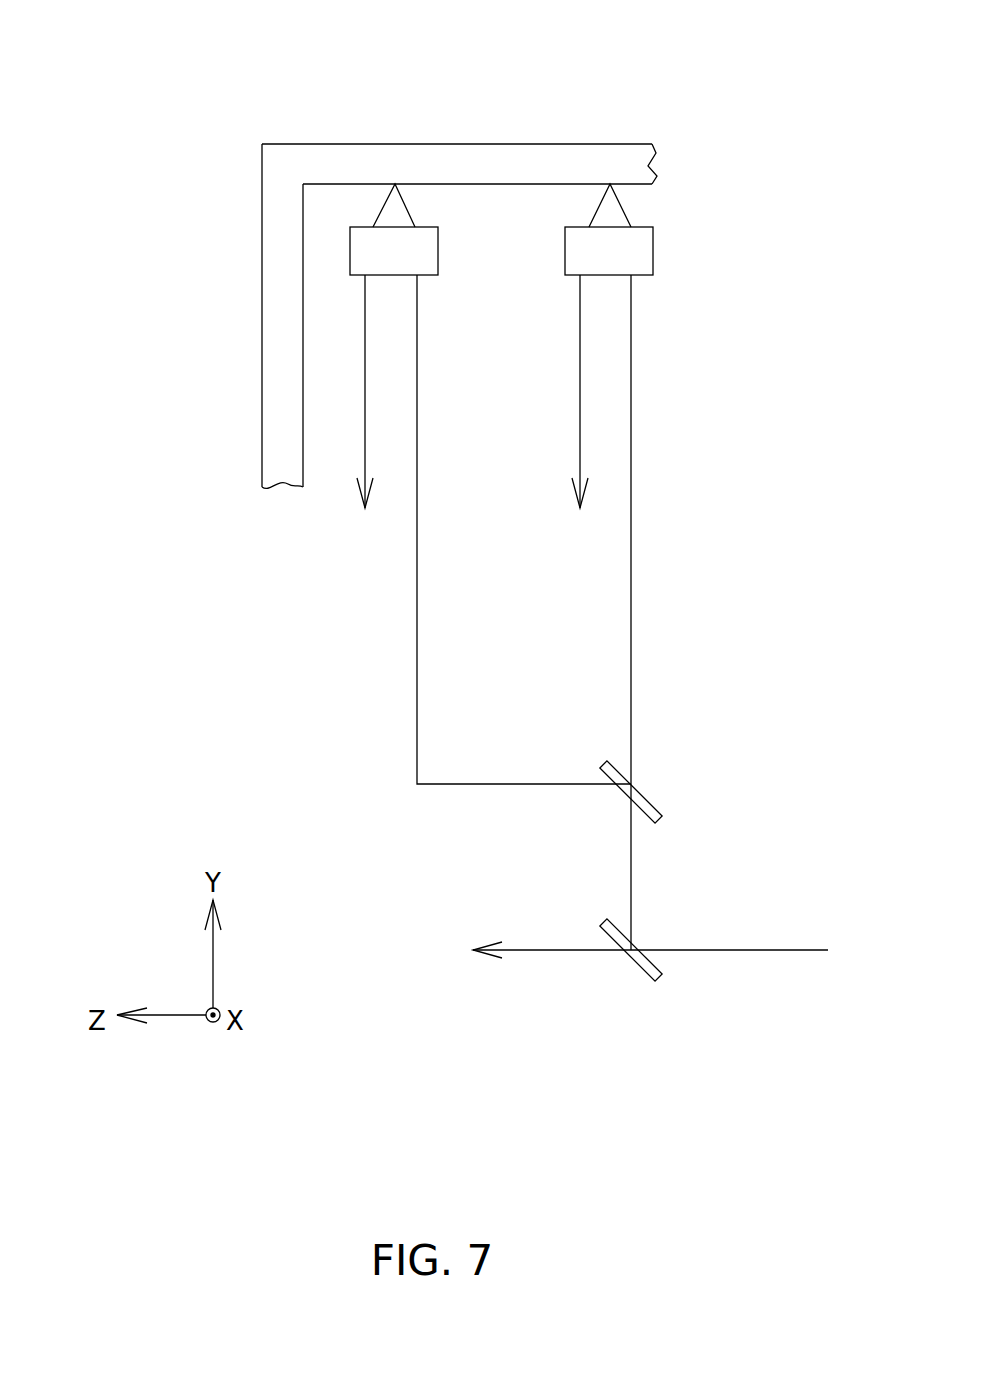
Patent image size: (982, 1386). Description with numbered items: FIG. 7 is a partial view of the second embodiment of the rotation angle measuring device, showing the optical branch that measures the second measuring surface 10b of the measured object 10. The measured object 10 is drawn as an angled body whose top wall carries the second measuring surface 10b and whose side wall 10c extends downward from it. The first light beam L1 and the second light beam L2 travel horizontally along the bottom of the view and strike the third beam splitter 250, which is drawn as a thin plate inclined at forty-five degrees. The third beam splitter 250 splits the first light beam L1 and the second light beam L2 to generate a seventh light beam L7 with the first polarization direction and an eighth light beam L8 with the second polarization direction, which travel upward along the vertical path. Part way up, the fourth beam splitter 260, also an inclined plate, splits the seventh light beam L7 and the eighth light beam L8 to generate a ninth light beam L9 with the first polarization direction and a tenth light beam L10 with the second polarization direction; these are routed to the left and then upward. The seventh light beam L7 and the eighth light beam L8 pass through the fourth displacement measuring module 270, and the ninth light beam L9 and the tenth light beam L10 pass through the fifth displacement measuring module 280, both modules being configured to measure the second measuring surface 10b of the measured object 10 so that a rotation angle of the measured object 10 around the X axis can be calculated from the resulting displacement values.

The measured object 10 is at (333, 88).
The second measuring surface 10b is at (476, 184).
The side wall of housing 10c is at (303, 280).
The fifth displacement measuring module 280 is at (368, 267).
The fourth displacement measuring module 270 is at (636, 267).
The fourth beam splitter 260 is at (648, 803).
The third beam splitter 250 is at (603, 922).
The ninth light beam L9 is at (416, 648).
The tenth light beam L10 is at (428, 529).
The seventh light beam L7 is at (631, 645).
The eighth light beam L8 is at (677, 612).
The first light beam L1 is at (565, 952).
The second light beam L2 is at (650, 997).